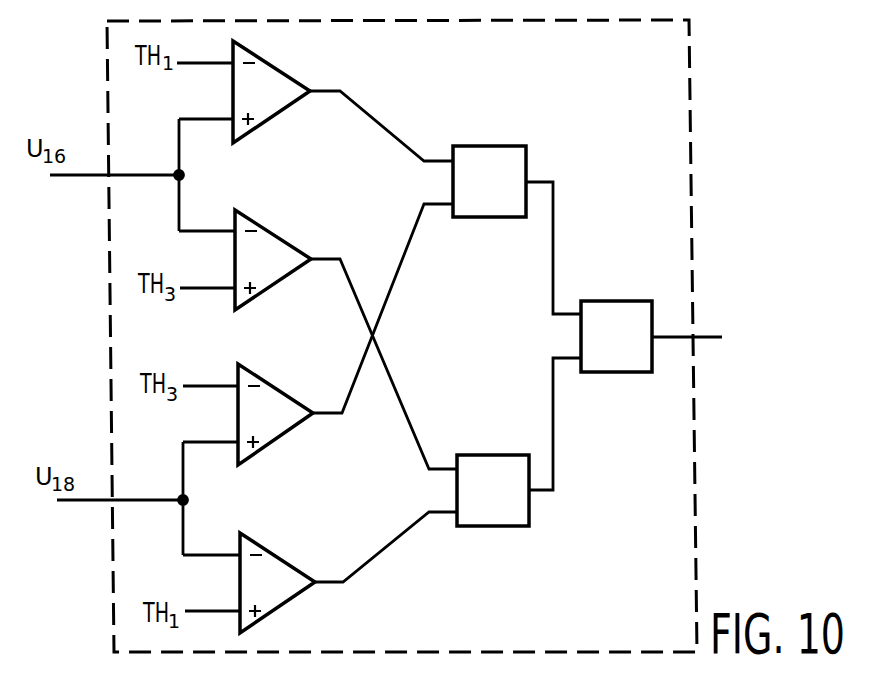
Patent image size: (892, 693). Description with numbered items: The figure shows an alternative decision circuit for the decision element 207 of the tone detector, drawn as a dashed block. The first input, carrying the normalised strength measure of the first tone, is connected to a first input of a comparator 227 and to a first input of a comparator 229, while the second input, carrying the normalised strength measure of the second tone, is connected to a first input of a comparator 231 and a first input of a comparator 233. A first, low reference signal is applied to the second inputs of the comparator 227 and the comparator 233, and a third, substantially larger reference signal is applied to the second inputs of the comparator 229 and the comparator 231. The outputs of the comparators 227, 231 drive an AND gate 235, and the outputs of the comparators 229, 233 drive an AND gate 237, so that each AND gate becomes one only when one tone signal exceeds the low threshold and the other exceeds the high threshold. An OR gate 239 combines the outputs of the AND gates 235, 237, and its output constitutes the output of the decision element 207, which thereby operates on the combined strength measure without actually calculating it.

The decision element 207 is at (108, 332).
The comparator 227 is at (257, 56).
The comparator 229 is at (260, 224).
The comparator 231 is at (263, 448).
The comparator 233 is at (265, 621).
The AND gate 235 is at (492, 217).
The AND gate 237 is at (492, 455).
The OR gate 239 is at (620, 302).